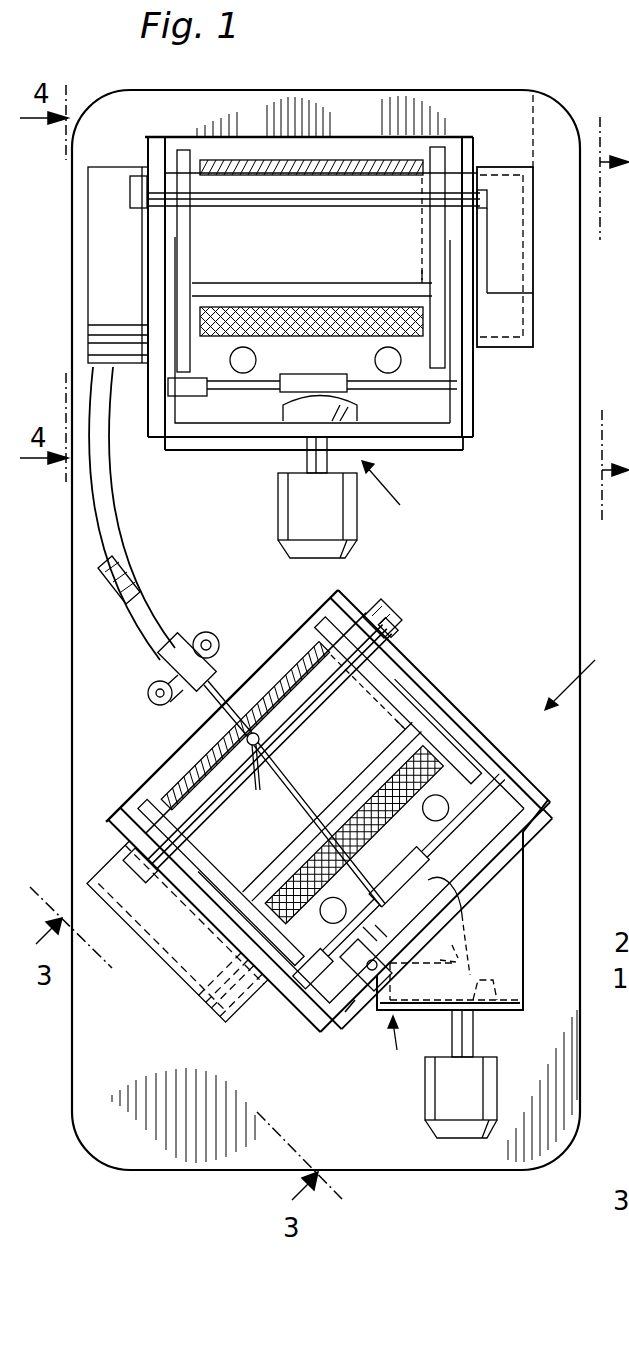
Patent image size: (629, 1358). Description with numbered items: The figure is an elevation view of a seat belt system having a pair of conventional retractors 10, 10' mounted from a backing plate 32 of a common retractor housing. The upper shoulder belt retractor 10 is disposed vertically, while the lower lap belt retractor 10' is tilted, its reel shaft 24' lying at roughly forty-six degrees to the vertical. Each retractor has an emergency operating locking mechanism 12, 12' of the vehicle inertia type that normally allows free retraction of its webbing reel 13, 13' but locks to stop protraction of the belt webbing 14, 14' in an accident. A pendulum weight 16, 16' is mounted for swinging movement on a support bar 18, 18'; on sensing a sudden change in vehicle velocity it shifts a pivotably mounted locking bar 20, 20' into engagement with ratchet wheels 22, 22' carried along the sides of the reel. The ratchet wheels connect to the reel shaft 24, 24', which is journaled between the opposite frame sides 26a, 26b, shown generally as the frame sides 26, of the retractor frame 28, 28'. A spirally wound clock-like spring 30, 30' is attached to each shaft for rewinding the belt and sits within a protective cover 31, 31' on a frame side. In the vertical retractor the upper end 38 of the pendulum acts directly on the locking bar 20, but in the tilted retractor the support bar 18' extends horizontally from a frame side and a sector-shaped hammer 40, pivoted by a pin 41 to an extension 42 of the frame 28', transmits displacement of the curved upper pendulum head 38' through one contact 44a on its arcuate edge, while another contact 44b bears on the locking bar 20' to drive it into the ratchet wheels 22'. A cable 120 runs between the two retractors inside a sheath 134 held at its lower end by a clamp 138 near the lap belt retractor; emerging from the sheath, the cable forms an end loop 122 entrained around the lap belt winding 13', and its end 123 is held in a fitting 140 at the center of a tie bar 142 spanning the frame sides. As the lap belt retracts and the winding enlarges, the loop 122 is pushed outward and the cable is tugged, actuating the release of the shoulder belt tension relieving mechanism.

The seat belt retractor 10 is at (350, 630).
The seat belt retractor 10' is at (587, 676).
The emergency operating locking mechanism 12 is at (403, 502).
The emergency operating locking mechanism 12' is at (400, 1051).
The webbing reel 13 is at (360, 360).
The webbing reel 13' is at (390, 791).
The belt webbing 14 is at (311, 116).
The belt webbing 14' is at (207, 708).
The pendulum weight 16 is at (317, 497).
The pendulum weight 16' is at (461, 1074).
The support bar 18 is at (314, 462).
The support bar 18' is at (468, 929).
The locking bar 20 is at (312, 370).
The locking bar 20' is at (429, 908).
The ratchet wheels 22 is at (297, 213).
The ratchet wheels 22' is at (346, 874).
The reel shaft 24 is at (472, 257).
The reel shaft 24' is at (430, 670).
The frame sides 26 is at (535, 782).
The frame side 26a is at (142, 148).
The frame side 26b is at (468, 140).
The retractor frame 28 is at (308, 175).
The retractor frame 28' is at (260, 745).
The clock-like spring 30 is at (323, 209).
The clock-like spring 30' is at (151, 958).
The protective cover 31 is at (563, 130).
The protective cover 31' is at (139, 970).
The backing plate 32 is at (135, 689).
The upper end of pendulum 38 is at (348, 403).
The upper pendulum head 38' is at (456, 969).
The hammer 40 is at (466, 922).
The pin 41 is at (358, 1022).
The extension 42 is at (350, 1010).
The contact 44a is at (458, 962).
The contact 44b is at (442, 893).
The cable 120 is at (125, 575).
The end loop 122 is at (336, 808).
The cable end 123 is at (283, 744).
The sheath 134 is at (108, 515).
The clamp 138 is at (185, 632).
The fitting 140 is at (255, 765).
The tie bar 142 is at (382, 613).